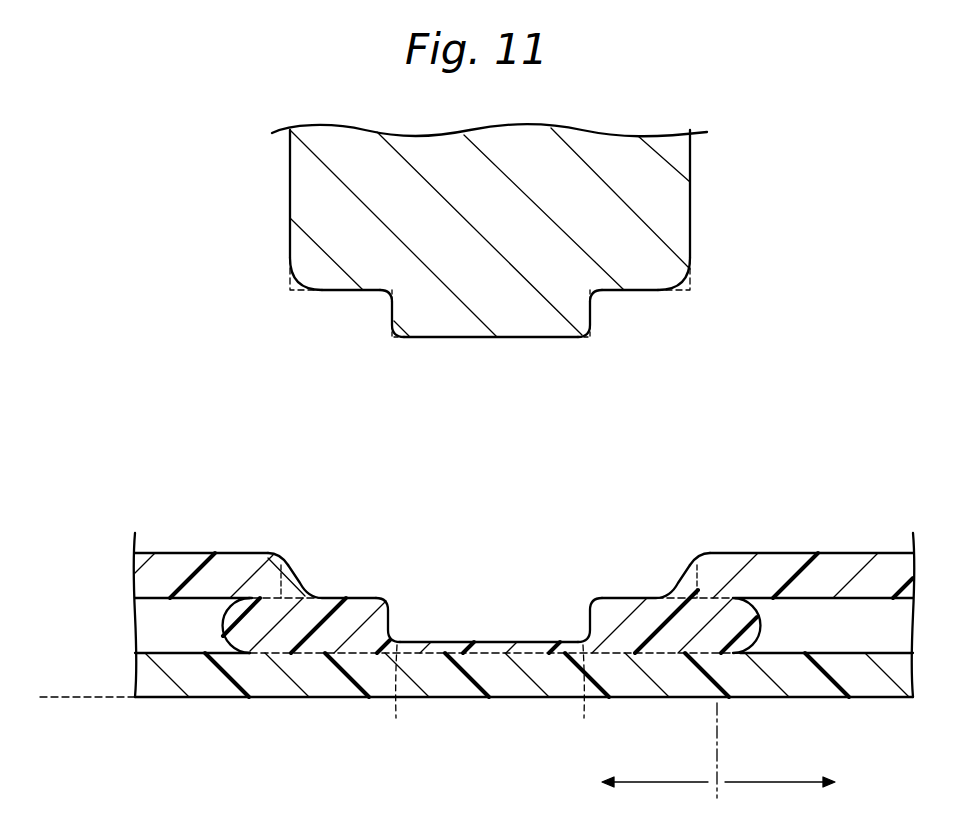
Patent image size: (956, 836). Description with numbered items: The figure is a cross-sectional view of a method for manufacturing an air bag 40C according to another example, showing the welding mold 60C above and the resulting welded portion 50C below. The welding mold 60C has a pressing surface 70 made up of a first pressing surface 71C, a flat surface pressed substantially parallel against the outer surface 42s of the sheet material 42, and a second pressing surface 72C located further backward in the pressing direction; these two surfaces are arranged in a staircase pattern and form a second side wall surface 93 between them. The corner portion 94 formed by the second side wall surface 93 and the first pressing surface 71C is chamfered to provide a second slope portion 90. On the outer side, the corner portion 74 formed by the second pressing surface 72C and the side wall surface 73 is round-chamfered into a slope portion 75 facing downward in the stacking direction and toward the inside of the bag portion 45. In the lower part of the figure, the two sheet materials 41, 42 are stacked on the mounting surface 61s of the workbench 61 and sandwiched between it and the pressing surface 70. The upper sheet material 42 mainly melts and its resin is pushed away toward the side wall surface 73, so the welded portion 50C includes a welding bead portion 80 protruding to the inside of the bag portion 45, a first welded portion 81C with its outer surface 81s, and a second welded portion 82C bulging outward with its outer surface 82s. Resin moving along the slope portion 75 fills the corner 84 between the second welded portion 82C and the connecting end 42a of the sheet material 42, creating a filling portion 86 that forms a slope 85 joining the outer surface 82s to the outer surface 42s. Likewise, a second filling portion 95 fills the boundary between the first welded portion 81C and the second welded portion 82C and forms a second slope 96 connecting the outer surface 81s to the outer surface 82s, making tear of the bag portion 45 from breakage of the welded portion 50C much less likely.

The pressing surface 70 is at (489, 275).
The welding mold 60C is at (489, 275).
The side wall surface 73 is at (290, 200).
The slope portion 75 is at (300, 283).
The corner portion 74 is at (288, 291).
The second pressing surface 72C is at (348, 292).
The second side wall surface 93 is at (388, 297).
The second slope portion 90 is at (397, 341).
The corner portion 94 is at (392, 333).
The first pressing surface 71C is at (446, 399).
The air bag 40C is at (180, 438).
The bag portion 45 is at (524, 561).
The sheet material 42 is at (524, 585).
The outer surface 42s is at (524, 585).
The connecting end 42a is at (268, 553).
The corner 84 is at (289, 560).
The second welded portion 82C is at (322, 597).
The outer surface 82s is at (489, 571).
The slope 85 is at (306, 567).
The filling portion 86 is at (494, 554).
The welded portion 50C is at (458, 527).
The second filling portion 95 is at (396, 639).
The second slope 96 is at (489, 616).
The first welded portion 81C is at (487, 640).
The outer surface 81s is at (489, 599).
The welding bead portion 80 is at (228, 622).
The sheet material 41 is at (818, 700).
The workbench 61 is at (40, 695).
The mounting surface 61s is at (466, 649).